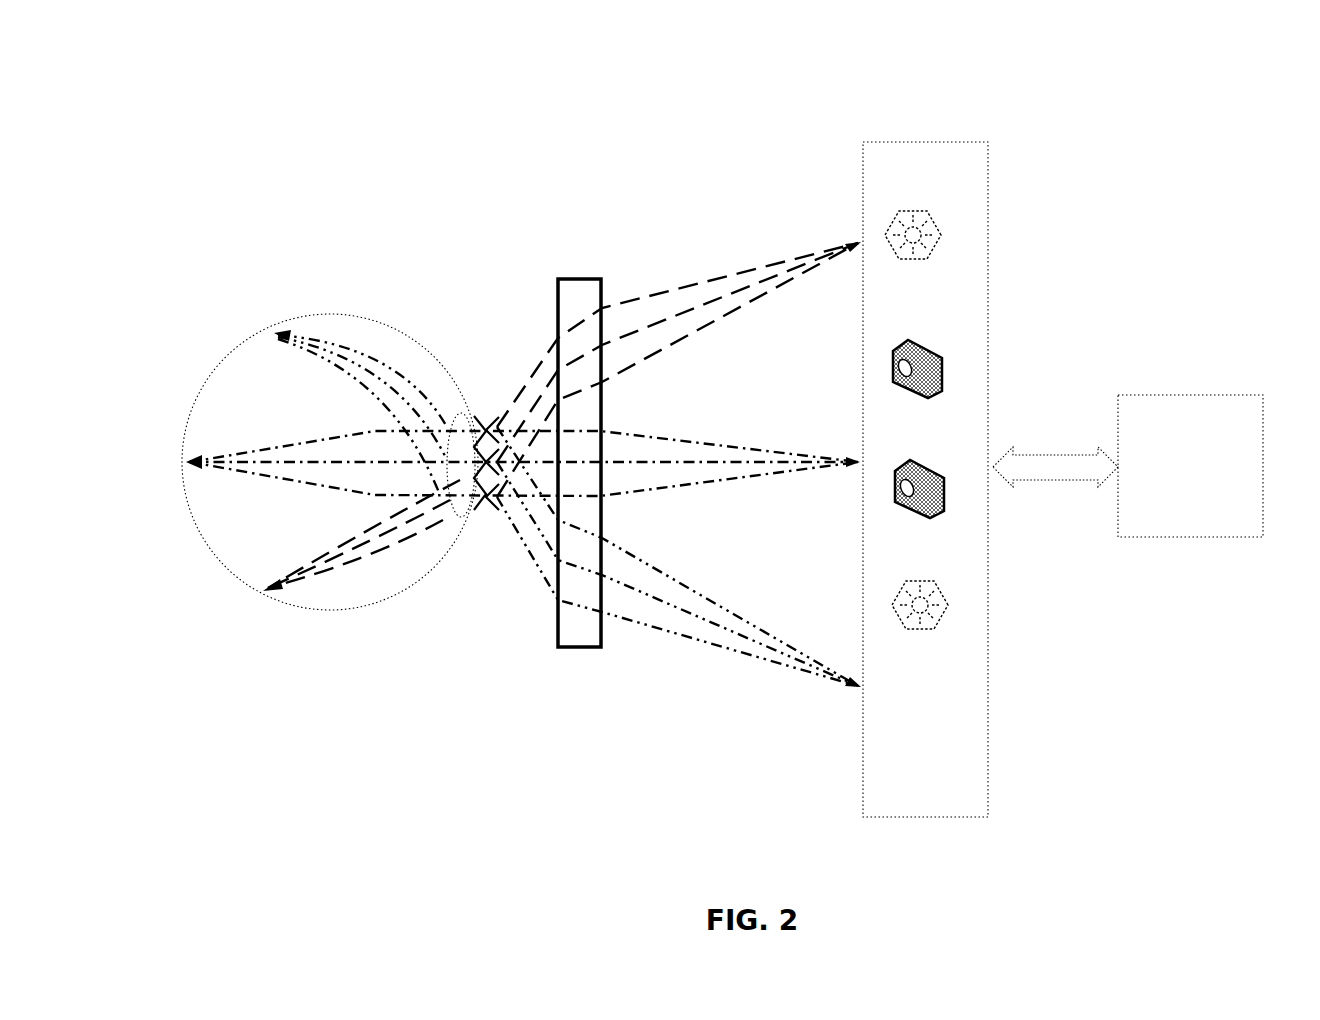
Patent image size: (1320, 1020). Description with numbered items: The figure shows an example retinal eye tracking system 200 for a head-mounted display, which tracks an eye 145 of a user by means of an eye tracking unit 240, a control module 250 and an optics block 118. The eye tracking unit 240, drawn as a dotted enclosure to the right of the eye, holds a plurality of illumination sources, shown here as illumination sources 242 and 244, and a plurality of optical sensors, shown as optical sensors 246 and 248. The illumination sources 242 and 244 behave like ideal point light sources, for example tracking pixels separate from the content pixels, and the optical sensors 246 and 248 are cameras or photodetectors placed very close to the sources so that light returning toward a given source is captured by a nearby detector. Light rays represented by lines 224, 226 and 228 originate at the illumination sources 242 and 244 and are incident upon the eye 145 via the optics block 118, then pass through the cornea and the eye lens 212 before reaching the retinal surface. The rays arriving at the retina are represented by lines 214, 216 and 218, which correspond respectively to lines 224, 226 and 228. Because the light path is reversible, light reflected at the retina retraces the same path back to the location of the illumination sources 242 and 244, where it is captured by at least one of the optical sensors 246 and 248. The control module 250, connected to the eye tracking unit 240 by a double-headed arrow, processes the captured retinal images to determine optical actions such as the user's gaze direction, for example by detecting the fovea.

The retinal eye tracking system 200 is at (190, 100).
The eye 145 is at (209, 361).
The optics block 118 is at (556, 282).
The lens 212 is at (462, 511).
The line representing light rays reaching the retinal surface 214 is at (197, 469).
The line representing light rays reaching the retinal surface 216 is at (285, 591).
The line representing light rays reaching the retinal surface 218 is at (313, 341).
The line representing light rays 224 is at (746, 481).
The line representing light rays 226 is at (720, 277).
The line representing light rays 228 is at (692, 644).
The eye tracking unit 240 is at (905, 796).
The illumination source 242 is at (892, 291).
The illumination source 244 is at (899, 659).
The optical sensor 246 is at (896, 424).
The optical sensor 248 is at (897, 551).
The control module 250 is at (1171, 506).